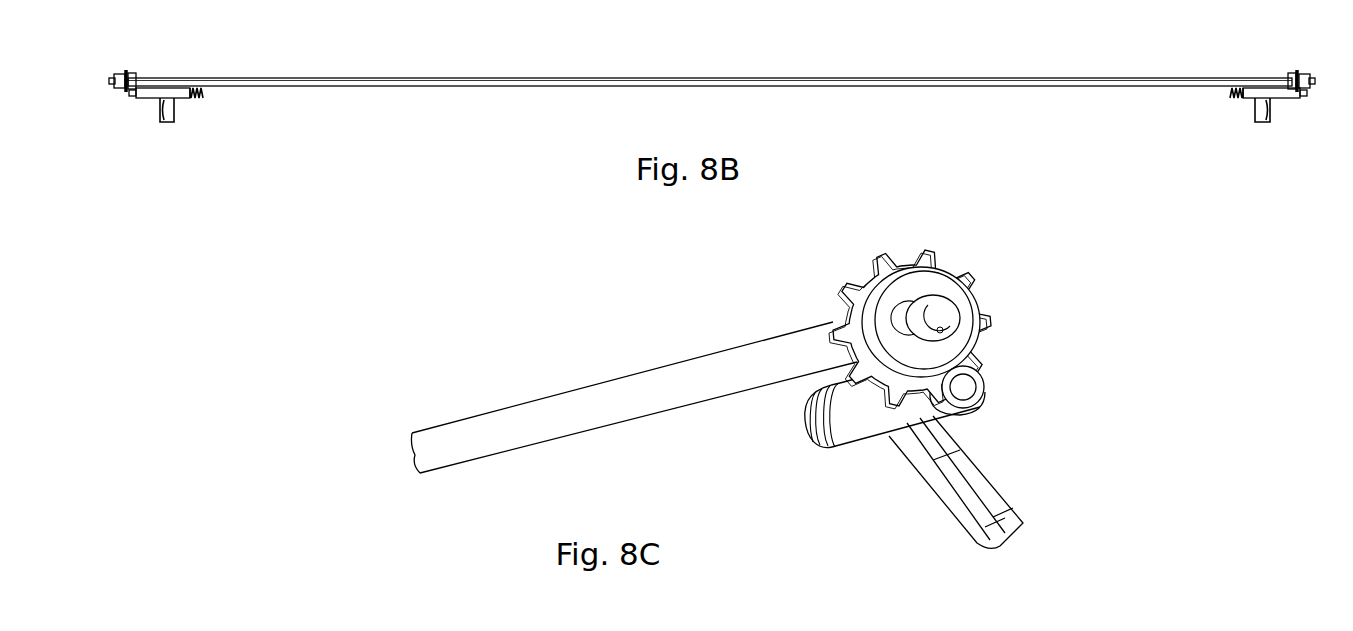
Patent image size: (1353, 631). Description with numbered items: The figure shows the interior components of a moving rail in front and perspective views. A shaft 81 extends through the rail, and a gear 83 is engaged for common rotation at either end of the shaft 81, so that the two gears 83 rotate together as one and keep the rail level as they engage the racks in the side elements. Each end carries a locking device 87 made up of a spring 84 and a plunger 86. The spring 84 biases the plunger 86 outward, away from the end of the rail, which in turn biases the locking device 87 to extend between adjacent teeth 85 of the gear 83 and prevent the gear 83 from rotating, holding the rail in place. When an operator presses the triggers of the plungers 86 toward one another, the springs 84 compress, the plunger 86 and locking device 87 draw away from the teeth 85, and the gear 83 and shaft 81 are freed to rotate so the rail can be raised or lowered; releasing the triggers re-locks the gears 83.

In FIG. 8B, the shaft 81 is at (715, 85).
In FIG. 8C, the shaft 81 is at (633, 393).
In FIG. 8B, the gear 83 is at (111, 82).
In FIG. 8C, the gear 83 is at (937, 287).
In FIG. 8B, the spring 84 is at (194, 92).
In FIG. 8C, the spring 84 is at (816, 420).
In FIG. 8C, the teeth 85 is at (887, 253).
In FIG. 8B, the plunger 86 is at (151, 95).
In FIG. 8C, the plunger 86 is at (903, 412).
In FIG. 8B, the locking device 87 is at (199, 131).
In FIG. 8C, the locking device 87 is at (817, 496).